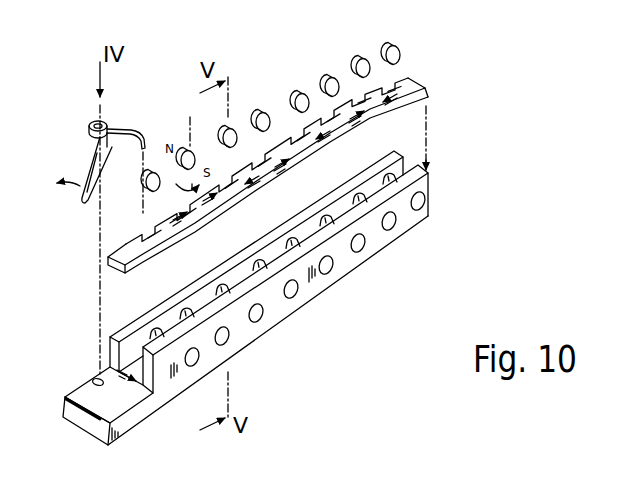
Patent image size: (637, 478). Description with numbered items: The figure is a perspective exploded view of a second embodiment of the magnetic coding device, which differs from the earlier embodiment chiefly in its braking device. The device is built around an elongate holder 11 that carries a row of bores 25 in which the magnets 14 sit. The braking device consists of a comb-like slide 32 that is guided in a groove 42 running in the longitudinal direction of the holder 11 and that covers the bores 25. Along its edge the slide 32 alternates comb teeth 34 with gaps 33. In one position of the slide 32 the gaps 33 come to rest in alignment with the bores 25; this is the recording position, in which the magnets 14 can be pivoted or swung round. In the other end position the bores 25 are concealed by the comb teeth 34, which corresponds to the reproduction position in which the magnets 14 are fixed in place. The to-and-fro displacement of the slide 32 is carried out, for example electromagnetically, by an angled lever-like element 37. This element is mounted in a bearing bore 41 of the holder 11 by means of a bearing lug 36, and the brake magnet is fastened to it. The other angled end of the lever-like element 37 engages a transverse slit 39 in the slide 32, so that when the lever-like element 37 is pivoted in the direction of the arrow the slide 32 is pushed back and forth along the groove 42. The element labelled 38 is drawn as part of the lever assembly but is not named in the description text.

The holder 11 is at (292, 308).
The magnets 14 is at (145, 188).
The bores 25 is at (229, 341).
The comb-like slide 32 is at (421, 82).
The gaps 33 is at (356, 100).
The comb teeth 34 is at (281, 150).
The bearing lug 36 is at (90, 143).
The lever-like element 37 is at (80, 202).
The rod 38 is at (133, 133).
The transverse slit 39 is at (150, 259).
The bearing bore 41 is at (95, 377).
The groove 42 is at (388, 194).